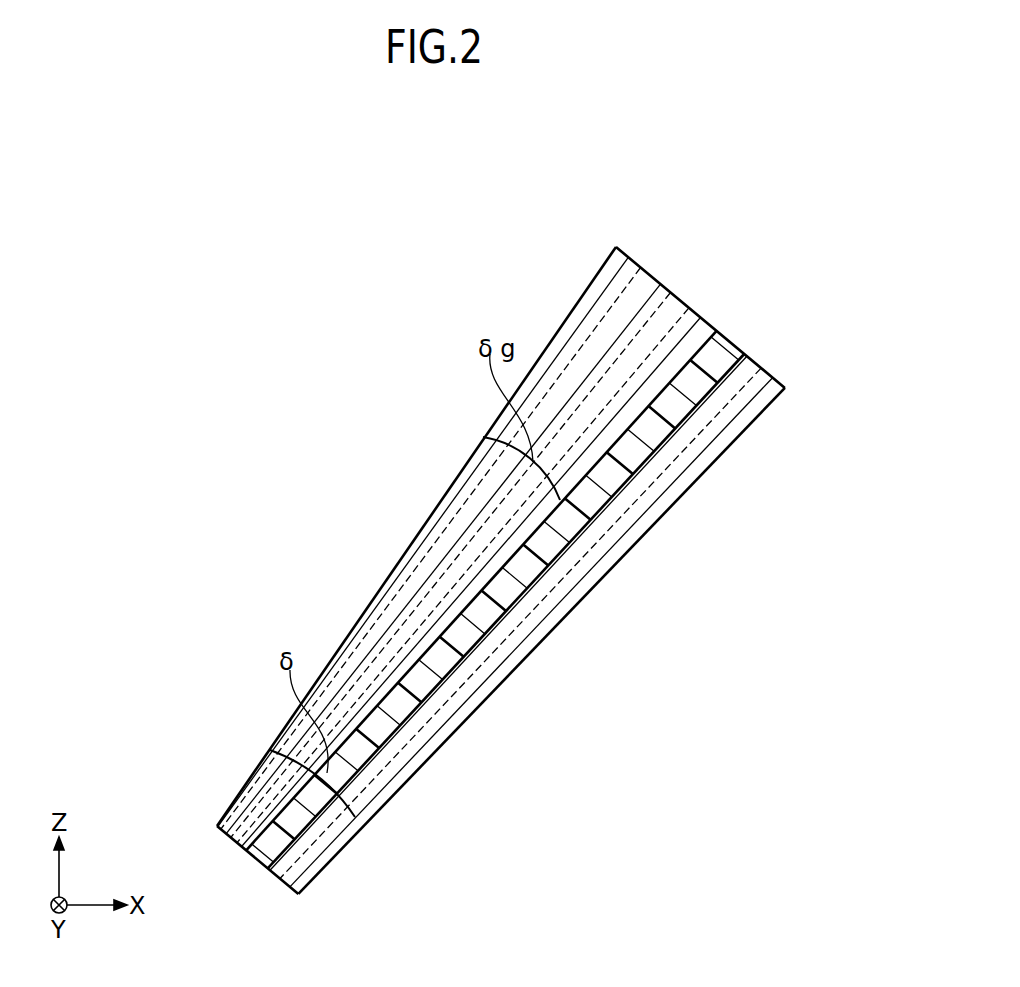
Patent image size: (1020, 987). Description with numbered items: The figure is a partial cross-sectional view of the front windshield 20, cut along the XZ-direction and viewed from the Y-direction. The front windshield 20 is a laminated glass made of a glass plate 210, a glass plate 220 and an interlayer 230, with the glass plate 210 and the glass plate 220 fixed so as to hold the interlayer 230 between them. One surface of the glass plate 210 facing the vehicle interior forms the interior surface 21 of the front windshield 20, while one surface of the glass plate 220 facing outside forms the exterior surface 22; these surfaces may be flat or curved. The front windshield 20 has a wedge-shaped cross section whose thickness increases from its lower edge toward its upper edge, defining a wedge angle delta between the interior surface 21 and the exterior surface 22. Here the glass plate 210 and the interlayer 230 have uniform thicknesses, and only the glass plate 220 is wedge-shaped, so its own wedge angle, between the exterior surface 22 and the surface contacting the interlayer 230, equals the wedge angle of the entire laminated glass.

The front windshield 20 is at (615, 215).
The interior surface 21 is at (568, 617).
The exterior surface 22 is at (421, 528).
The glass plate 210 is at (760, 377).
The glass plate 220 is at (650, 285).
The interlayer 230 is at (727, 349).